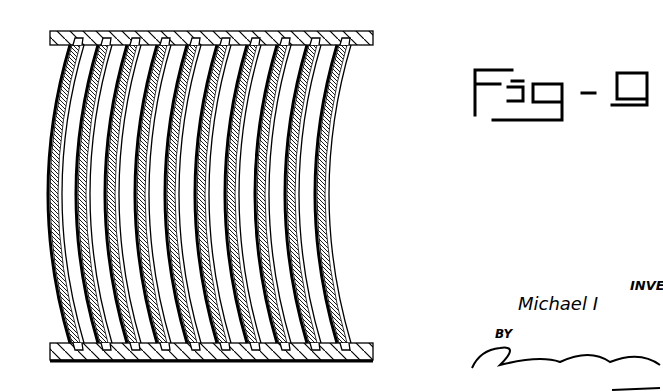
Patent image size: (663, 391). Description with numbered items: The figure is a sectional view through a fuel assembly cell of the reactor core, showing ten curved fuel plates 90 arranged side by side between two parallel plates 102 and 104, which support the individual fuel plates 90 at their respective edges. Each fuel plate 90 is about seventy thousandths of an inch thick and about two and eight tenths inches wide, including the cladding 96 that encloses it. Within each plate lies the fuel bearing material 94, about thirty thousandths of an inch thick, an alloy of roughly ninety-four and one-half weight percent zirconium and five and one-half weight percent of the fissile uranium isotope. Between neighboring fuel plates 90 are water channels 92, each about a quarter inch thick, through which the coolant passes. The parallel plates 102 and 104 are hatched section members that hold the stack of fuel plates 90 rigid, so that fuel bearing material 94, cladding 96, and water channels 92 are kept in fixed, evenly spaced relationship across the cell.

The fuel plates 90 is at (193, 194).
The water channels 92 is at (318, 130).
The fuel bearing material 94 is at (90, 106).
The cladding 96 is at (93, 80).
The parallel plate 102 is at (88, 353).
The parallel plate 104 is at (366, 47).